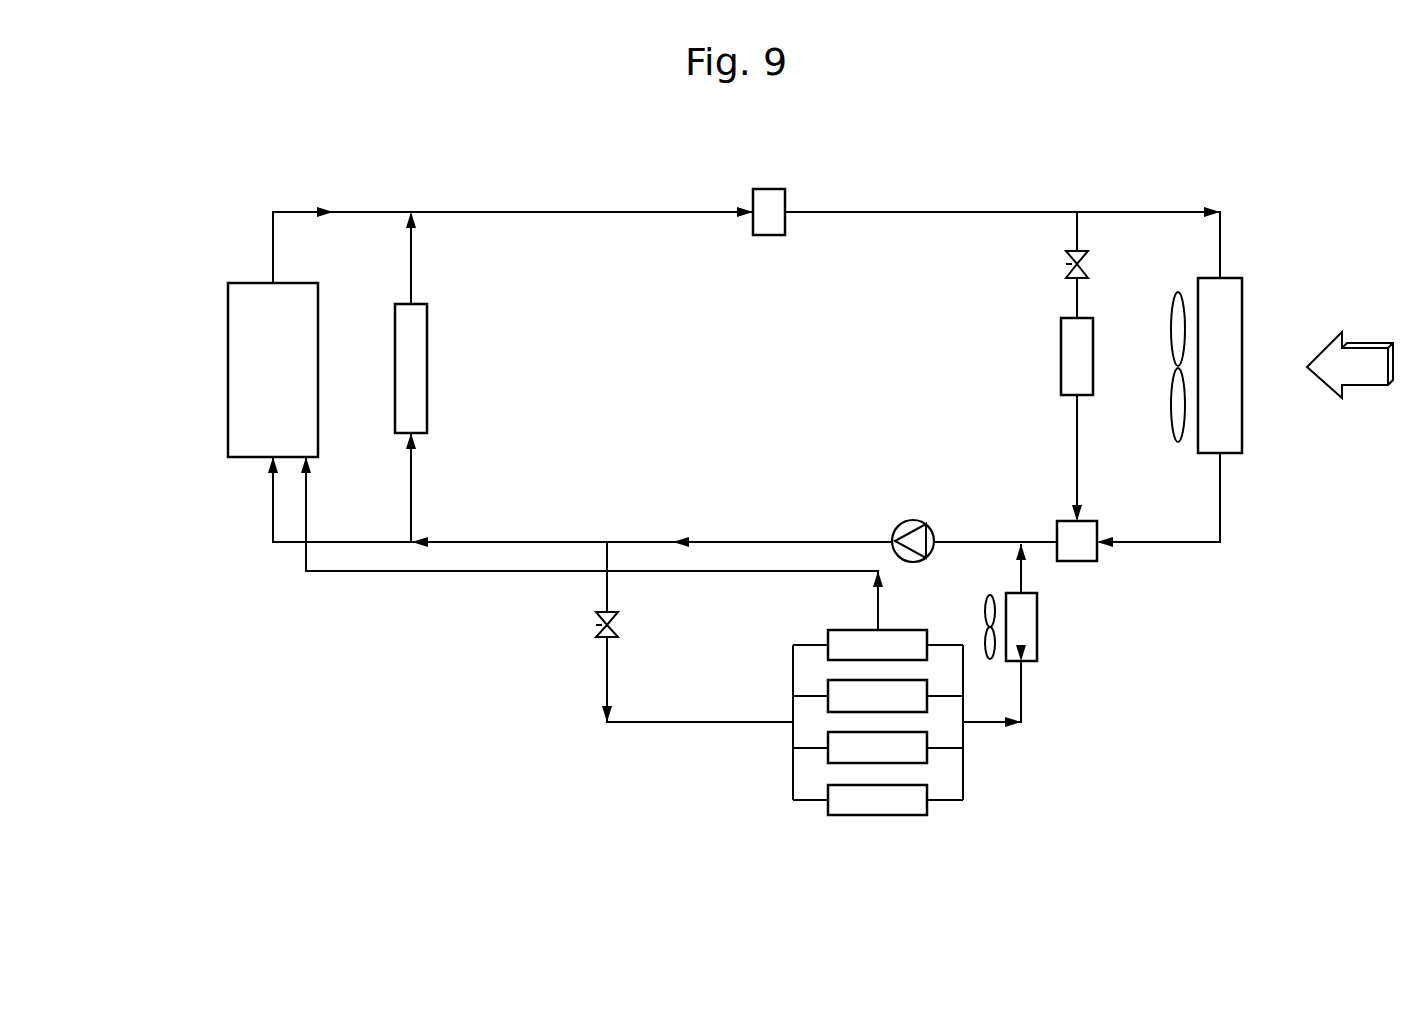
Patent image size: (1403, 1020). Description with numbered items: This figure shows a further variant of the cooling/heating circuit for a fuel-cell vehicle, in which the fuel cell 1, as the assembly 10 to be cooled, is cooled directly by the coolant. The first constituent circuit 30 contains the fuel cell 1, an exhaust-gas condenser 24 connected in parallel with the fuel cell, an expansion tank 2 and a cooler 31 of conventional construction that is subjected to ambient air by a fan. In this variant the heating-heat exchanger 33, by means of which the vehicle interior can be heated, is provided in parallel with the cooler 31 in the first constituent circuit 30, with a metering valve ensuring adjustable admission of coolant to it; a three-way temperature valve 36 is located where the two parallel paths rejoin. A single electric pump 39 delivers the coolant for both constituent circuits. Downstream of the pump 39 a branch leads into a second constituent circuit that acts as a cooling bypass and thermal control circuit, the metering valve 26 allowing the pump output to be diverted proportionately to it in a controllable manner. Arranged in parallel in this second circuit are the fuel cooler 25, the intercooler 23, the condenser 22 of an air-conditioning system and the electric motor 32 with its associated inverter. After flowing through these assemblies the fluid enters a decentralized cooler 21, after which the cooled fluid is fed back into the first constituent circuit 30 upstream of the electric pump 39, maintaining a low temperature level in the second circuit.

The fuel cell 1 is at (237, 366).
The assembly to be cooled 10 is at (330, 452).
The expansion tank 2 is at (770, 193).
The exhaust-gas condenser 24 is at (420, 397).
The first constituent circuit 30 is at (1077, 180).
The heating-heat exchanger 33 is at (1082, 346).
The cooler 31 is at (1237, 341).
The electric pump 39 is at (920, 520).
The three-way temperature valve 36 is at (1080, 555).
The decentralized cooler 21 is at (1032, 645).
The fuel cooler 25 is at (913, 633).
The intercooler 23 is at (836, 690).
The condenser of an air-conditioning system 22 is at (836, 755).
The electric motor 32 is at (877, 808).
The metering valve 26 is at (618, 626).